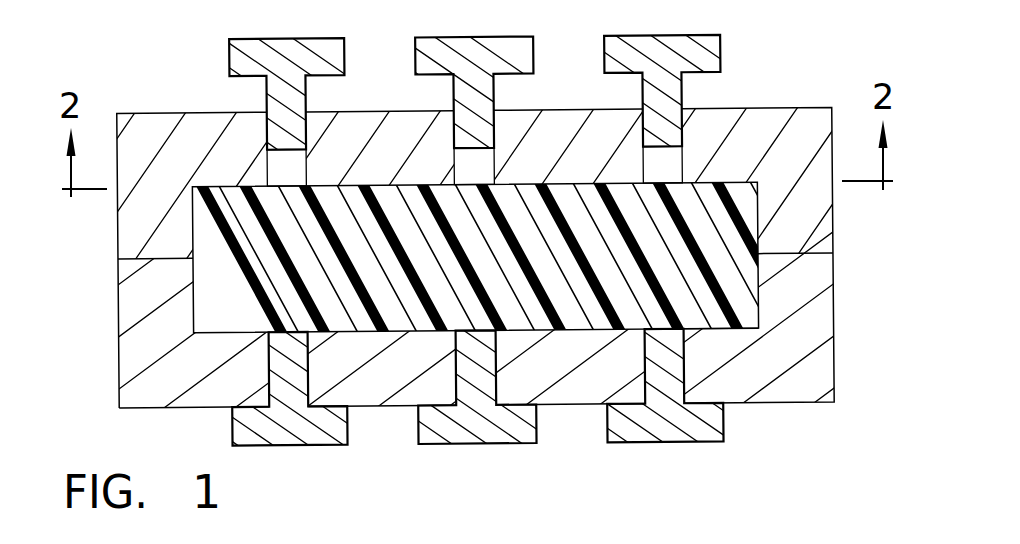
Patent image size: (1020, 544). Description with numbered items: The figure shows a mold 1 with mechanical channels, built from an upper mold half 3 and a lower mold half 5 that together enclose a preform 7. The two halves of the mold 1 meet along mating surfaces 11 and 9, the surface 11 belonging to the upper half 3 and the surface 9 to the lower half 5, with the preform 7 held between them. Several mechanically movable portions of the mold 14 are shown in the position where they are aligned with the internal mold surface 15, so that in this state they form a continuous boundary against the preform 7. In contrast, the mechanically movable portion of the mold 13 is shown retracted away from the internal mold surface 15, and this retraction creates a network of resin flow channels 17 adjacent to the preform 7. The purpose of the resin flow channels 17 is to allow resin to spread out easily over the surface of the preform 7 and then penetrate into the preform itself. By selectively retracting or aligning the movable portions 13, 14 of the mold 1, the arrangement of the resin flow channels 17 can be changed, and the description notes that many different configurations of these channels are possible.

The mold 1 is at (142, 54).
The upper mold half 3 is at (143, 228).
The lower mold half 5 is at (148, 345).
The preform 7 is at (573, 318).
The mating surface of lower mold half 9 is at (788, 257).
The mating surface of upper mold half 11 is at (790, 252).
The retracted mechanically movable mold portion 13 is at (682, 42).
The mechanically movable mold portions 14 is at (670, 433).
The internal mold surface 15 is at (709, 316).
The resin flow channels 17 is at (663, 168).